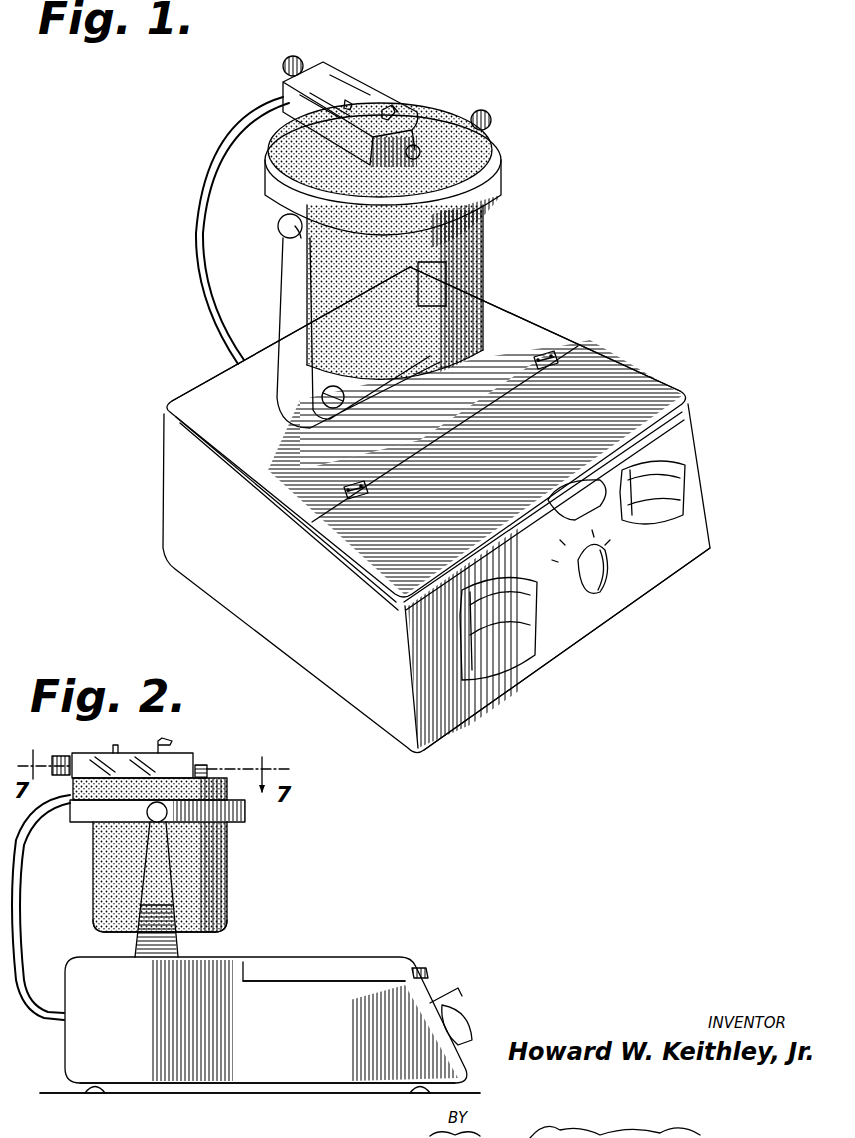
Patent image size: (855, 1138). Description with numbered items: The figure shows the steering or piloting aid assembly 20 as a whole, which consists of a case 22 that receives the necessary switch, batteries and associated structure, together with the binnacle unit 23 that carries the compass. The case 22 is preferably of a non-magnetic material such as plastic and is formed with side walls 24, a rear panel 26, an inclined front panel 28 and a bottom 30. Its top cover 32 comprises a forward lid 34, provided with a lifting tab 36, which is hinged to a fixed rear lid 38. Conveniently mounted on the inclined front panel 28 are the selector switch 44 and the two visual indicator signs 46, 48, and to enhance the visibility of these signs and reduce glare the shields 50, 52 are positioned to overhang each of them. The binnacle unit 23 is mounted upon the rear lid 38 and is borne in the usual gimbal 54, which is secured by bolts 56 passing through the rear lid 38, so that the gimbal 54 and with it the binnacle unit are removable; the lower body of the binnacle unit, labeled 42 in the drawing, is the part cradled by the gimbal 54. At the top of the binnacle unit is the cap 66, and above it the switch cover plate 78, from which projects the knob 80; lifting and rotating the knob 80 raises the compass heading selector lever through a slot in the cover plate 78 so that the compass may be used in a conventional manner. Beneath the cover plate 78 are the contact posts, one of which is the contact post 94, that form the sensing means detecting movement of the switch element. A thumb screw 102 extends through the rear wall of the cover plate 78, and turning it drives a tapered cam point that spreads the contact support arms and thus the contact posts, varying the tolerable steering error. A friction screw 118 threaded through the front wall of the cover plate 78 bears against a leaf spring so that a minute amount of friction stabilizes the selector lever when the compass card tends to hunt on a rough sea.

In FIG. 1, the piloting aid assembly 20 is at (521, 298).
In FIG. 2, the piloting aid assembly 20 is at (288, 915).
In FIG. 1, the case 22 is at (196, 523).
In FIG. 2, the case 22 is at (275, 1005).
In FIG. 1, the binnacle unit 23 is at (338, 286).
In FIG. 2, the binnacle unit 23 is at (115, 870).
In FIG. 2, the side walls 24 is at (270, 1050).
In FIG. 1, the rear panel 26 is at (242, 230).
In FIG. 2, the rear panel 26 is at (62, 992).
In FIG. 1, the inclined front panel 28 is at (602, 603).
In FIG. 2, the bottom 30 is at (298, 1093).
In FIG. 1, the top cover 32 is at (550, 342).
In FIG. 1, the forward lid 34 is at (608, 380).
In FIG. 2, the forward lid 34 is at (335, 965).
In FIG. 1, the lifting tab 36 is at (590, 482).
In FIG. 2, the lifting tab 36 is at (426, 968).
In FIG. 1, the fixed rear lid 38 is at (223, 397).
In FIG. 1, the compass housing 42 is at (455, 362).
In FIG. 2, the compass housing 42 is at (98, 905).
In FIG. 1, the selector switch 44 is at (602, 570).
In FIG. 2, the selector switch 44 is at (470, 1030).
In FIG. 1, the visual indicator sign 46 is at (512, 630).
In FIG. 1, the visual indicator sign 48 is at (672, 514).
In FIG. 1, the shield 50 is at (528, 592).
In FIG. 2, the shield 50 is at (452, 992).
In FIG. 1, the shield 52 is at (672, 470).
In FIG. 1, the gimbal 54 is at (292, 336).
In FIG. 2, the gimbal 54 is at (148, 940).
In FIG. 1, the bolts 56 is at (320, 418).
In FIG. 1, the cap 66 is at (478, 150).
In FIG. 2, the cap 66 is at (232, 800).
In FIG. 1, the switch cover plate 78 is at (356, 90).
In FIG. 2, the switch cover plate 78 is at (146, 753).
In FIG. 1, the knob 80 is at (396, 108).
In FIG. 2, the knob 80 is at (172, 742).
In FIG. 1, the contact post 94 is at (345, 103).
In FIG. 2, the contact post 94 is at (115, 750).
In FIG. 1, the thumb screw 102 is at (300, 62).
In FIG. 2, the thumb screw 102 is at (58, 754).
In FIG. 1, the friction screw 118 is at (421, 146).
In FIG. 2, the friction screw 118 is at (207, 768).